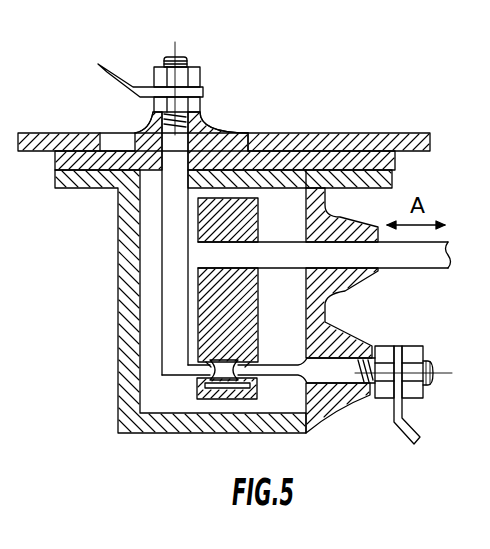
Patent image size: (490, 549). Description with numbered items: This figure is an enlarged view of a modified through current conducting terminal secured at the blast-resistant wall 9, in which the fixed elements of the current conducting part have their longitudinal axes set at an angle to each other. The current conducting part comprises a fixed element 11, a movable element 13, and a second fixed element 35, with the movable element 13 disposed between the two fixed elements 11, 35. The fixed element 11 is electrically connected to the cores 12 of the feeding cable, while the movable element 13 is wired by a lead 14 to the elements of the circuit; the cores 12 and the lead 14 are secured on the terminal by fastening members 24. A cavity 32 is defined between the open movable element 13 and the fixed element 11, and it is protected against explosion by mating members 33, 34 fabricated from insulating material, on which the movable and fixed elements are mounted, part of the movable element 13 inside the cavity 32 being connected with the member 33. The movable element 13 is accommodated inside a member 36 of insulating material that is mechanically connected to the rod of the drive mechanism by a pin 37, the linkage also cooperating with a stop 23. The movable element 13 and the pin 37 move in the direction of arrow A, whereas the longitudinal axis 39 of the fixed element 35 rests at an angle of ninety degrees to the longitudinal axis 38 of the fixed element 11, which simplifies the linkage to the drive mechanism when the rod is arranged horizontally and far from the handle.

The blast-resistant wall 9 is at (33, 131).
The fixed element of the current conducting part 11 is at (190, 61).
The cores of the feeding cable 12 is at (119, 77).
The movable element of the current conducting part 13 is at (230, 383).
The lead 14 is at (403, 437).
The stop 23 is at (384, 353).
The fastening member 24 is at (196, 78).
The cavity 32 is at (298, 200).
The mating member of insulating material 33 is at (128, 224).
The mating member of insulating material 34 is at (242, 140).
The fixed element of the current conducting part 35 is at (345, 378).
The member of insulating material 36 is at (198, 297).
The pin 37 is at (447, 250).
The longitudinal axis of the fixed element 38 is at (178, 44).
The longitudinal axis of the fixed element 39 is at (449, 378).